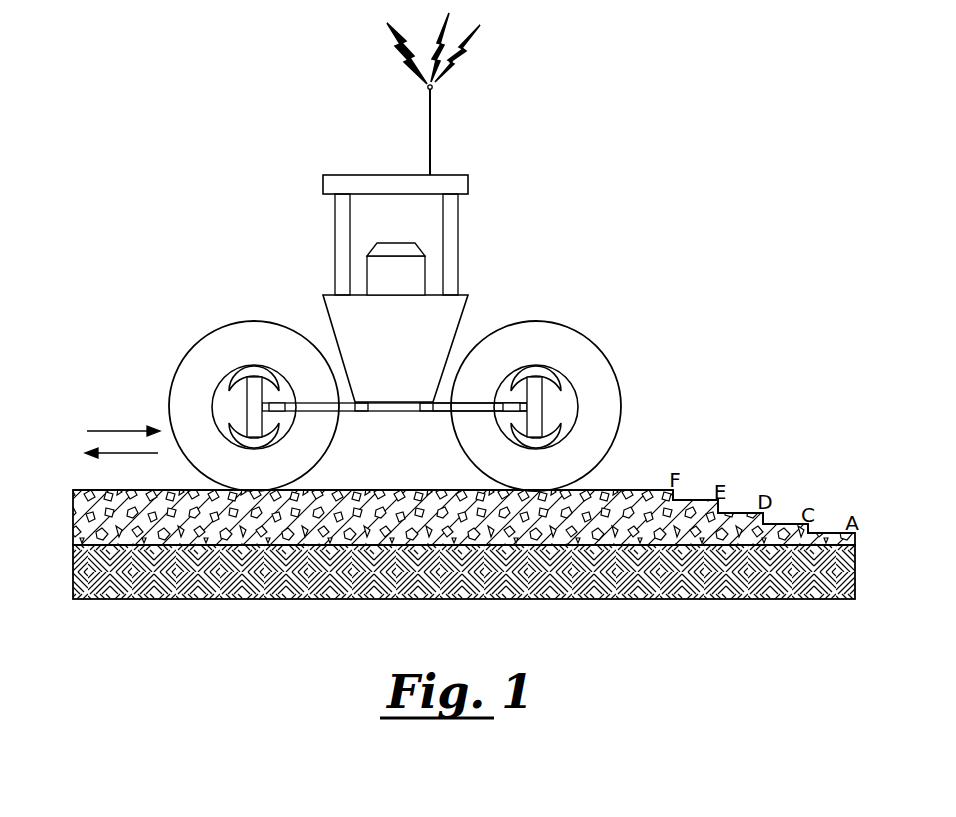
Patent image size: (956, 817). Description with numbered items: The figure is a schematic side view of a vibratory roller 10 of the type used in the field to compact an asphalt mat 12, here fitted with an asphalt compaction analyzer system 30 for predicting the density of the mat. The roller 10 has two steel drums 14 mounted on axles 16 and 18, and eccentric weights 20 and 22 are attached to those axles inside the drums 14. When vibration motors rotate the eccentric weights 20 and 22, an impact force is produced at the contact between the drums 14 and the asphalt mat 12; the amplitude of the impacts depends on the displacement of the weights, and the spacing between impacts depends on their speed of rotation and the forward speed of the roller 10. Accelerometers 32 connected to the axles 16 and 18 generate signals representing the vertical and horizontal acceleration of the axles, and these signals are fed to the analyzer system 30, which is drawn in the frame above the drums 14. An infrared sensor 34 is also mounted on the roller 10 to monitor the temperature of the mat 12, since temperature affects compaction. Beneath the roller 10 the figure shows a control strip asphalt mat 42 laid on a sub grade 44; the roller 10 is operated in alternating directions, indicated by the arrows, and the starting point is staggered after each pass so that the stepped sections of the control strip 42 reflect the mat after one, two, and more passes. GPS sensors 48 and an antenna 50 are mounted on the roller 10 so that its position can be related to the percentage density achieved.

The vibratory roller 10 is at (458, 250).
The asphalt mat 12 is at (97, 490).
The steel drums 14 is at (201, 340).
The axle 16 is at (322, 412).
The axle 18 is at (468, 413).
The eccentric weight 20 is at (254, 366).
The eccentric weight 22 is at (553, 373).
The asphalt compaction analyzer system 30 is at (367, 275).
The accelerometers 32 is at (282, 403).
The infrared sensor 34 is at (364, 412).
The control strip asphalt mat 42 is at (830, 533).
The sub grade 44 is at (165, 599).
The GPS sensors 48 is at (426, 413).
The antenna 50 is at (431, 128).